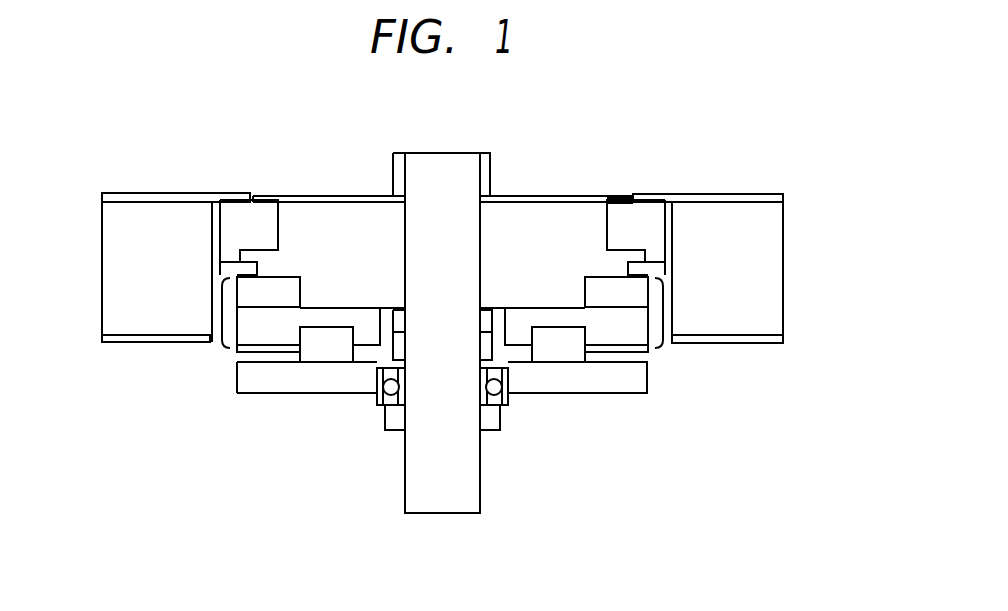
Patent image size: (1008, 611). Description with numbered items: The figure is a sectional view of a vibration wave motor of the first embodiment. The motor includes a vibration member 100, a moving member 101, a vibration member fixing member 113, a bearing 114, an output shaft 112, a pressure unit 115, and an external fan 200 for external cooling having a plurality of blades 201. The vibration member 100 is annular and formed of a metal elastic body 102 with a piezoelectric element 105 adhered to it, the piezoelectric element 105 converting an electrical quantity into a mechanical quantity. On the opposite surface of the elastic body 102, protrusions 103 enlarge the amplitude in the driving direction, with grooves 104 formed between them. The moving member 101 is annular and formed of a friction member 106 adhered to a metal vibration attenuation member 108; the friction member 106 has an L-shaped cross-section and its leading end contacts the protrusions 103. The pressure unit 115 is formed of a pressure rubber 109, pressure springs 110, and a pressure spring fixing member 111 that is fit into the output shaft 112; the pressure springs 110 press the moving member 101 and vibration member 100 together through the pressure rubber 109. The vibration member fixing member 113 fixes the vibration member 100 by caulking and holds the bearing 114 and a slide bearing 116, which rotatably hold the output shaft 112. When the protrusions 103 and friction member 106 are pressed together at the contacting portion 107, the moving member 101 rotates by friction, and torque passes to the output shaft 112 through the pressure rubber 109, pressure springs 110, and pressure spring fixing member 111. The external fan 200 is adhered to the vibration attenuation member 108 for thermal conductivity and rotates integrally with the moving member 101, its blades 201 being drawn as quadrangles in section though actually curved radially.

The vibration member 100 is at (218, 308).
The moving member 101 is at (283, 202).
The elastic body 102 is at (660, 308).
The protrusions 103 is at (287, 293).
The grooves 104 is at (321, 318).
The piezoelectric element 105 is at (273, 348).
The friction member 106 is at (628, 272).
The contacting portion 107 is at (628, 275).
The vibration attenuation member 108 is at (615, 230).
The pressure rubber 109 is at (622, 197).
The pressure springs 110 is at (573, 197).
The pressure spring fixing member 111 is at (488, 172).
The output shaft 112 is at (470, 488).
The vibration member fixing member 113 is at (355, 387).
The bearing 114 is at (505, 400).
The pressure unit 115 is at (698, 107).
The slide bearing 116 is at (487, 323).
The external fan 200 is at (797, 193).
The blades 201 is at (753, 318).